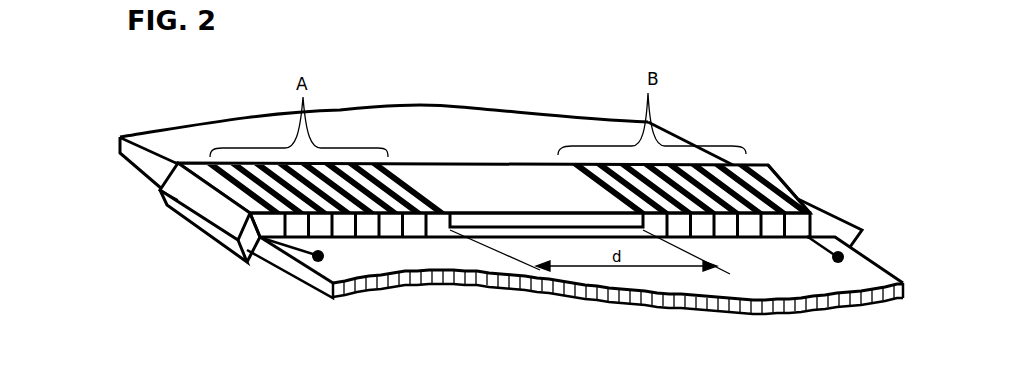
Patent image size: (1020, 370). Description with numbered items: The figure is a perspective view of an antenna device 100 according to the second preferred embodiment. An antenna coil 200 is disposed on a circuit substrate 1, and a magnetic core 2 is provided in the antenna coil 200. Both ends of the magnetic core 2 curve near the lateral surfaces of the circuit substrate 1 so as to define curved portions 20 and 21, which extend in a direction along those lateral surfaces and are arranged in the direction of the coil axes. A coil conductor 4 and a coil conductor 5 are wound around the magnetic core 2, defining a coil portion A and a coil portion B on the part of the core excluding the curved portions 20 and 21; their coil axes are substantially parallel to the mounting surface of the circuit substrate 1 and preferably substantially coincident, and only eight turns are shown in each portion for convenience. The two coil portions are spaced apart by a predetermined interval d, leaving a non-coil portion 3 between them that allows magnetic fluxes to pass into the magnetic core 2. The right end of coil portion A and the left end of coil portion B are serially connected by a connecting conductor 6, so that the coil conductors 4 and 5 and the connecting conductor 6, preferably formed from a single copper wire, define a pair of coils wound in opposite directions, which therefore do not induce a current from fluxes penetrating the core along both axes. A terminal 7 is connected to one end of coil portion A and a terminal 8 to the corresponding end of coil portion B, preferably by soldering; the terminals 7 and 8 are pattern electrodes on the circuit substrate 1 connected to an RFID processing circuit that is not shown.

The antenna device 100 is at (84, 46).
The antenna coil 200 is at (195, 164).
The circuit substrate 1 is at (500, 140).
The magnetic core 2 is at (440, 228).
The non-coil portion 3 is at (491, 188).
The coil conductor 4 is at (380, 225).
The coil conductor 5 is at (758, 226).
The connecting conductor 6 is at (546, 229).
The terminal 7 is at (306, 262).
The terminal 8 is at (832, 259).
The curved portion 20 is at (197, 195).
The curved portion 21 is at (793, 179).